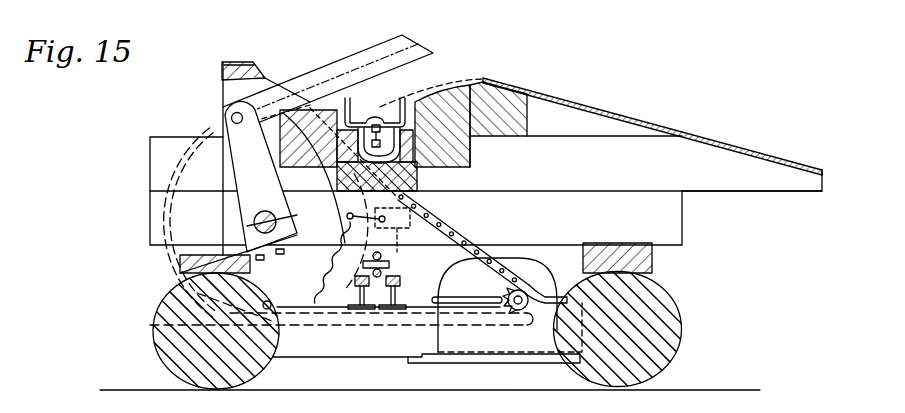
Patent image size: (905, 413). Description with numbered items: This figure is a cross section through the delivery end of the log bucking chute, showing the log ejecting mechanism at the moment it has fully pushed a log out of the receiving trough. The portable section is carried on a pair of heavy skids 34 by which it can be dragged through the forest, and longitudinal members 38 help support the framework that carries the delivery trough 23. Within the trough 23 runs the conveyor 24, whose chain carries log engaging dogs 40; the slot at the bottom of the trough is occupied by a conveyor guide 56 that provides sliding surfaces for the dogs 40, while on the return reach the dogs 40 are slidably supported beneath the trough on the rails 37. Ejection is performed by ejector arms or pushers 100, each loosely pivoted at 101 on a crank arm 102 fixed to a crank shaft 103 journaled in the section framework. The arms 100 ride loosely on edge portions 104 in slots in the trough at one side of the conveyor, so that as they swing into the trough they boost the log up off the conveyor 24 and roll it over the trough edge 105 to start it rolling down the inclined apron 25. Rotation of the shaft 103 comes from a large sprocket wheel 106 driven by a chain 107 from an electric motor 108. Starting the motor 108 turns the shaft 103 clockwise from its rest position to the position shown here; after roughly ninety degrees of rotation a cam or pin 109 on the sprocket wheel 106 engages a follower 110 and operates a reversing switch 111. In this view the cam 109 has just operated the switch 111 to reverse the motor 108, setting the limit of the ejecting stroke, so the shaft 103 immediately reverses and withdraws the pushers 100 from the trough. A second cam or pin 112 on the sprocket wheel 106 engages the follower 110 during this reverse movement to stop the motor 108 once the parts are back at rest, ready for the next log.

The ejector arms or pushers 100 is at (393, 48).
The edge portions 104 is at (311, 107).
The delivery trough 23 is at (470, 84).
The trough edge 105 is at (485, 78).
The inclined apron 25 is at (647, 117).
The log engaging dogs 40 is at (407, 106).
The conveyor 24 is at (375, 125).
The conveyor guide 56 is at (470, 147).
The pivot 101 is at (225, 108).
The crank arms 102 is at (238, 152).
The crank shaft 103 is at (254, 221).
The cam or pin 109 is at (348, 216).
The follower 110 is at (350, 252).
The reversing switch 111 is at (389, 265).
The electric motor 108 is at (452, 277).
The chain 107 is at (530, 240).
The cam or pin 112 is at (271, 306).
The sprocket wheel 106 is at (303, 310).
The rails 37 is at (393, 311).
The longitudinal members 38 is at (653, 263).
The skids 34 is at (155, 317).